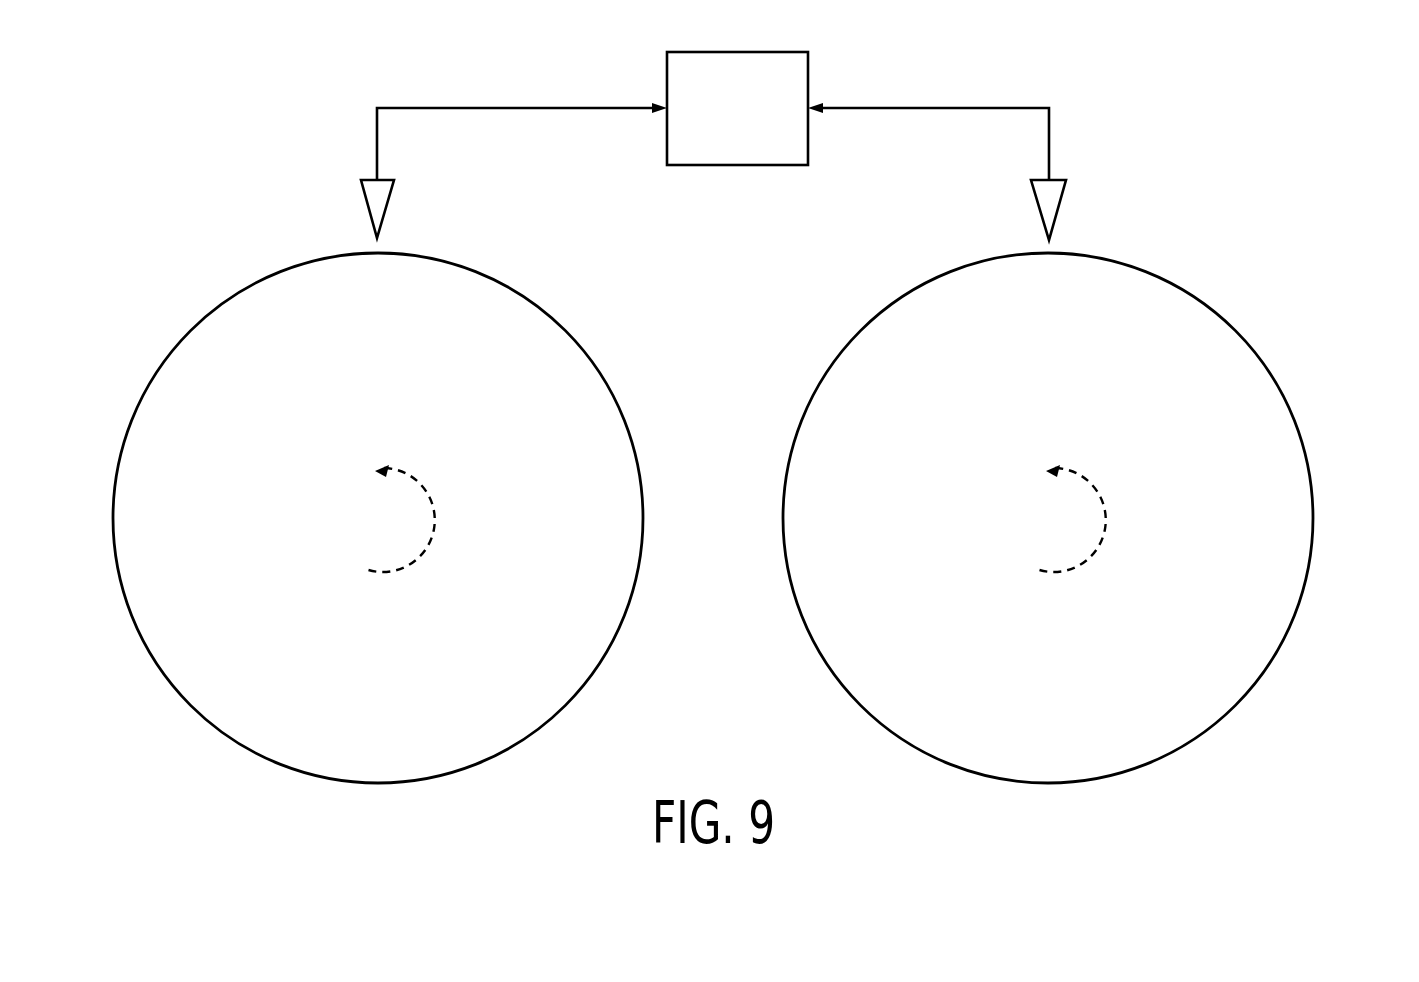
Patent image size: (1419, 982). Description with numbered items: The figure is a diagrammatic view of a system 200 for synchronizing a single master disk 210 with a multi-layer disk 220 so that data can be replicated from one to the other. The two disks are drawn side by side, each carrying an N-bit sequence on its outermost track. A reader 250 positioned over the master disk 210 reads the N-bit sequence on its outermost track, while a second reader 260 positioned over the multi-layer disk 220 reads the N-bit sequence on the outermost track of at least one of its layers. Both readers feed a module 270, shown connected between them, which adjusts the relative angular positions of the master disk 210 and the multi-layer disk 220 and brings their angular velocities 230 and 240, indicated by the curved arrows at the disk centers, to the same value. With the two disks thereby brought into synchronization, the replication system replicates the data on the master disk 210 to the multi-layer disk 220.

The system 200 is at (760, 417).
The single master disk 210 is at (643, 520).
The multi-layer disk 220 is at (1313, 520).
The angular velocity 230 is at (436, 530).
The angular velocity 240 is at (1107, 530).
The reader 250 is at (368, 212).
The reader 260 is at (1058, 212).
The module 270 is at (737, 165).